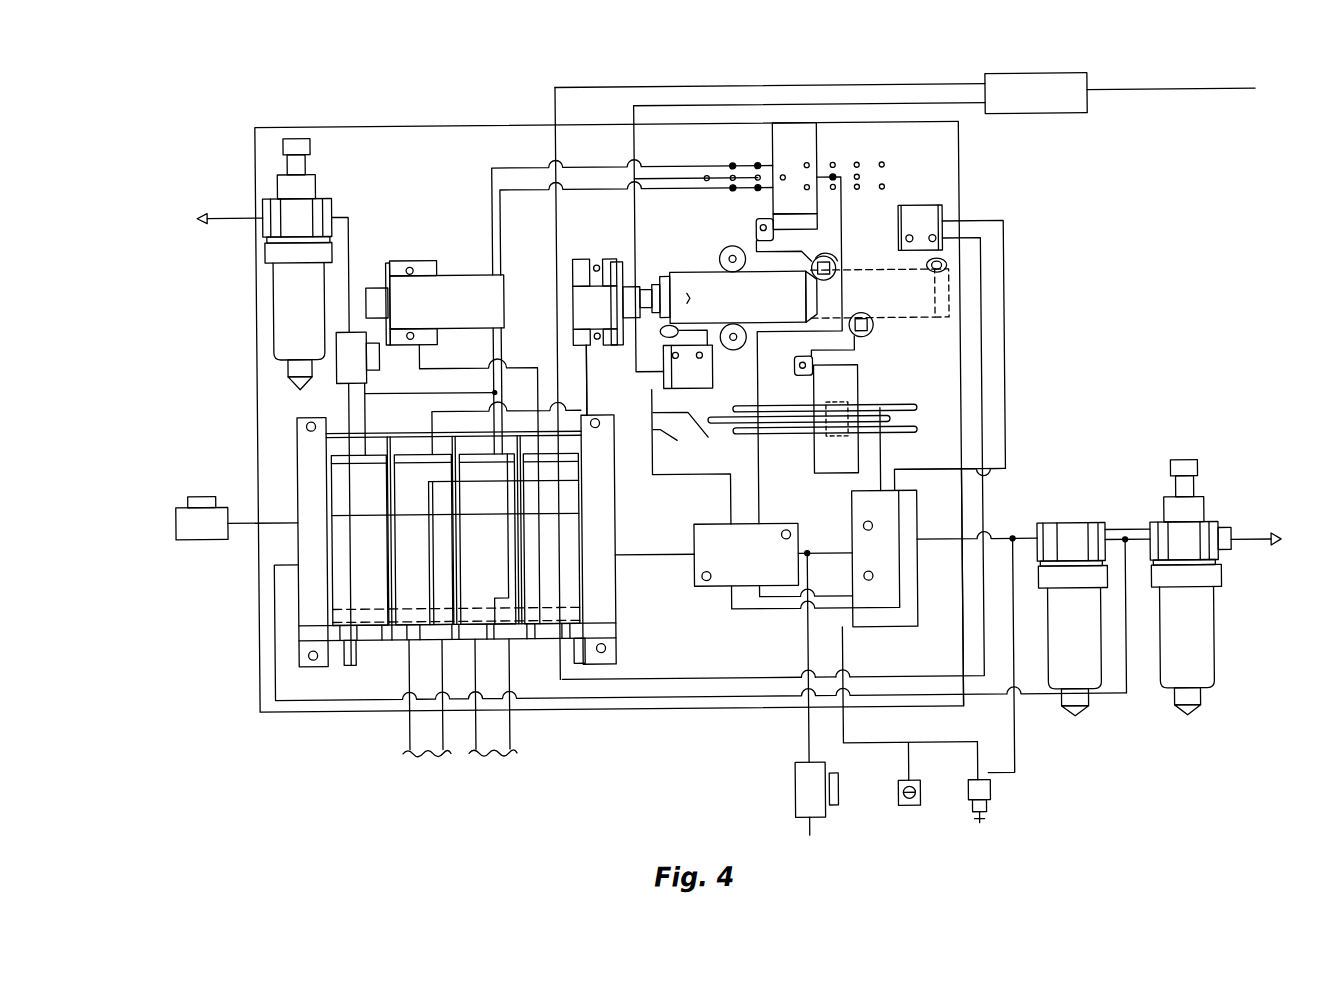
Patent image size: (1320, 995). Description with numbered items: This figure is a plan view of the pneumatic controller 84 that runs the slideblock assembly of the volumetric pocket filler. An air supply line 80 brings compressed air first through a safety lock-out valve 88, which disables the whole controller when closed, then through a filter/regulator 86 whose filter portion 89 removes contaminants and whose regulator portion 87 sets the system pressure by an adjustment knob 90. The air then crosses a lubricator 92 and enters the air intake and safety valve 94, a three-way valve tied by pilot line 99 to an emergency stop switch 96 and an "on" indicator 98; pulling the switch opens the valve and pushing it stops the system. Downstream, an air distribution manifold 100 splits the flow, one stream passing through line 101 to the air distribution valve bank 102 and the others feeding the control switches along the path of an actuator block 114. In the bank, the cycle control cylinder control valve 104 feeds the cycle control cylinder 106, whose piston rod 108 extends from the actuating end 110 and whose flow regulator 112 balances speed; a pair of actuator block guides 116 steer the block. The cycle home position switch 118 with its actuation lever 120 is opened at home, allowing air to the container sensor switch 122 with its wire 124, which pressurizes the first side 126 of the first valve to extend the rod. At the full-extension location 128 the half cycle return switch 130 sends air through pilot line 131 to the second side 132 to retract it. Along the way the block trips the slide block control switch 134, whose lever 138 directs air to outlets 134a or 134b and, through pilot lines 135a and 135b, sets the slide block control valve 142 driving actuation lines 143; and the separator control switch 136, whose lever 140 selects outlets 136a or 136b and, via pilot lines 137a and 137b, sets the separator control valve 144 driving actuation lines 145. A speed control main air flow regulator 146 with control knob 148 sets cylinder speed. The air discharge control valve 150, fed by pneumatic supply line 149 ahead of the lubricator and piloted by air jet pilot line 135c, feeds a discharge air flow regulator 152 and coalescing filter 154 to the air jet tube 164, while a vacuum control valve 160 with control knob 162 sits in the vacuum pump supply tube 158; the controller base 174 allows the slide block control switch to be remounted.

The air supply line 80 is at (1262, 536).
The pneumatic controller 84 is at (1188, 314).
The filter/regulator 86 is at (1138, 502).
The regulator portion 87 is at (1190, 538).
The safety lock-out valve 88 is at (1225, 533).
The filter portion 89 is at (1186, 618).
The adjustment knob 90 is at (1183, 464).
The lubricator 92 is at (1094, 619).
The air intake and safety valve 94 is at (910, 602).
The emergency stop switch 96 is at (990, 795).
The "on" indicator 98 is at (910, 808).
The pilot line 99 is at (846, 645).
The air distribution manifold 100 is at (776, 498).
The line 101 is at (627, 560).
The air distribution valve bank 102 is at (286, 468).
The cycle control cylinder control valve 104 is at (563, 556).
The cycle control cylinder 106 is at (452, 336).
The piston rod 108 is at (648, 285).
The actuating end 110 is at (633, 262).
The cycle control cylinder flow regulator 112 is at (590, 300).
The actuator block 114 is at (738, 297).
The actuator block guides 116 is at (744, 348).
The cycle home position switch 118 is at (662, 381).
The actuation lever 120 is at (705, 338).
The container sensor switch 122 is at (1065, 86).
The wire 124 is at (1186, 98).
The first side 126 is at (600, 424).
The location of full extension 128 is at (956, 322).
The half cycle return switch 130 is at (921, 220).
The pilot line 131 is at (983, 292).
The second side 132 is at (582, 607).
The slide block control switch 134 is at (803, 139).
The first outlet 134a is at (772, 194).
The second outlet 134b is at (772, 162).
The pilot line 135a is at (500, 217).
The pilot line 135b is at (492, 188).
The air jet pilot line 135c is at (402, 393).
The separator control switch 136 is at (843, 453).
The first outlet 136a is at (813, 440).
The second outlet 136b is at (813, 420).
The pilot line 137a is at (657, 438).
The pilot line 137b is at (690, 413).
The actuator lever 138 is at (828, 256).
The actuator lever 140 is at (860, 350).
The slide block control valve 142 is at (487, 543).
The actuation lines 143 is at (492, 712).
The separator control valve 144 is at (413, 557).
The actuation lines 145 is at (426, 712).
The speed control main air flow regulator 146 is at (184, 528).
The control knob 148 is at (200, 496).
The pneumatic supply line 149 is at (276, 686).
The air discharge control valve 150 is at (345, 587).
The discharge air flow regulator 152 is at (381, 358).
The coalescing filter 154 is at (297, 265).
The vacuum pump supply tube 158 is at (804, 832).
The vacuum control valve 160 is at (797, 788).
The control knob 162 is at (836, 800).
The air jet tube 164 is at (230, 216).
The controller base 174 is at (660, 714).